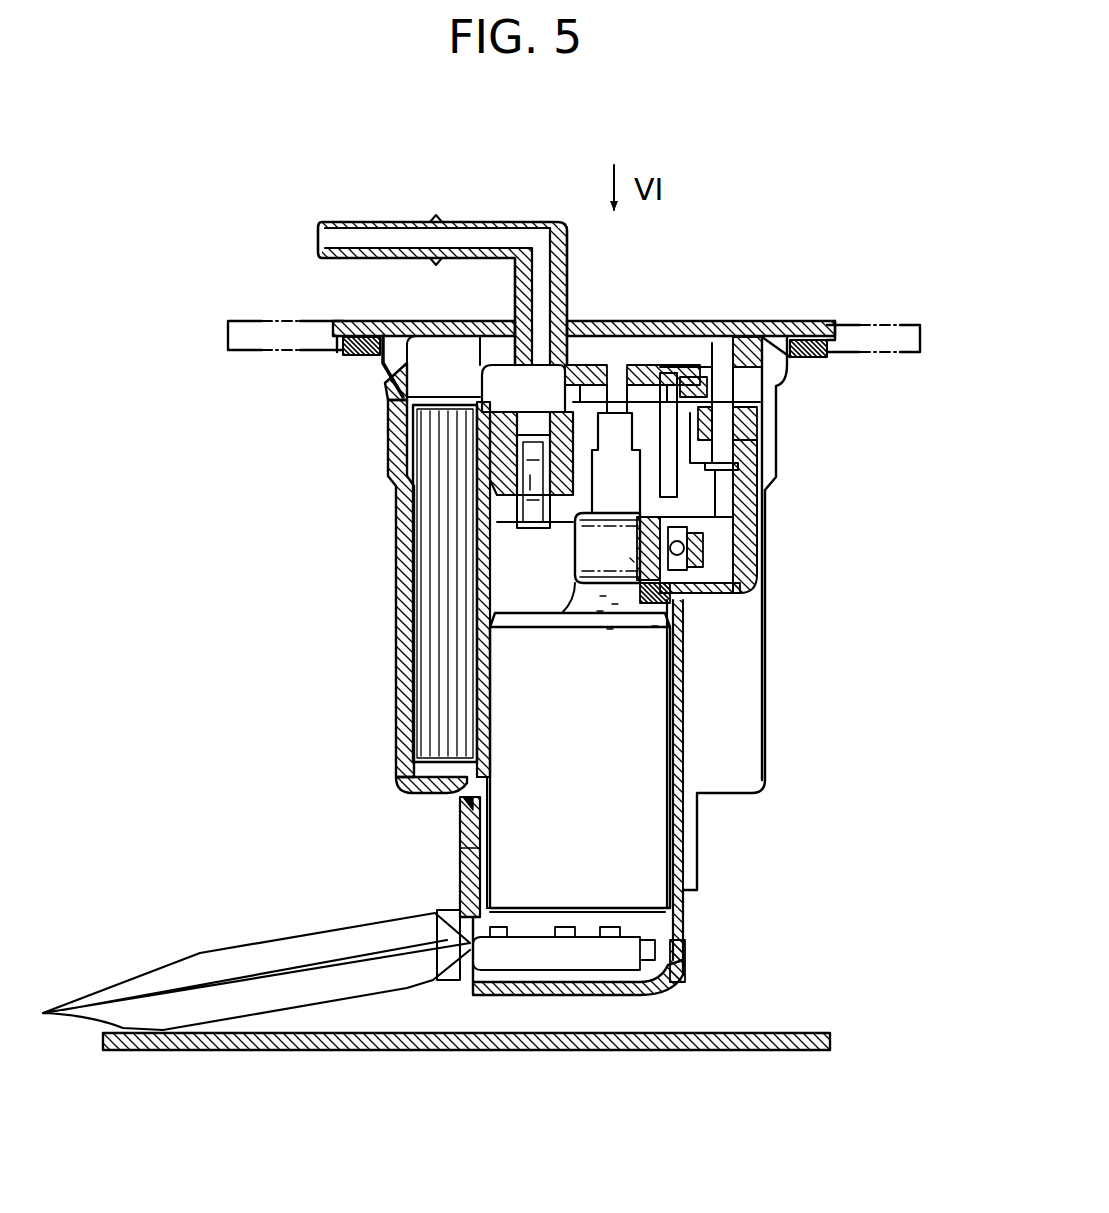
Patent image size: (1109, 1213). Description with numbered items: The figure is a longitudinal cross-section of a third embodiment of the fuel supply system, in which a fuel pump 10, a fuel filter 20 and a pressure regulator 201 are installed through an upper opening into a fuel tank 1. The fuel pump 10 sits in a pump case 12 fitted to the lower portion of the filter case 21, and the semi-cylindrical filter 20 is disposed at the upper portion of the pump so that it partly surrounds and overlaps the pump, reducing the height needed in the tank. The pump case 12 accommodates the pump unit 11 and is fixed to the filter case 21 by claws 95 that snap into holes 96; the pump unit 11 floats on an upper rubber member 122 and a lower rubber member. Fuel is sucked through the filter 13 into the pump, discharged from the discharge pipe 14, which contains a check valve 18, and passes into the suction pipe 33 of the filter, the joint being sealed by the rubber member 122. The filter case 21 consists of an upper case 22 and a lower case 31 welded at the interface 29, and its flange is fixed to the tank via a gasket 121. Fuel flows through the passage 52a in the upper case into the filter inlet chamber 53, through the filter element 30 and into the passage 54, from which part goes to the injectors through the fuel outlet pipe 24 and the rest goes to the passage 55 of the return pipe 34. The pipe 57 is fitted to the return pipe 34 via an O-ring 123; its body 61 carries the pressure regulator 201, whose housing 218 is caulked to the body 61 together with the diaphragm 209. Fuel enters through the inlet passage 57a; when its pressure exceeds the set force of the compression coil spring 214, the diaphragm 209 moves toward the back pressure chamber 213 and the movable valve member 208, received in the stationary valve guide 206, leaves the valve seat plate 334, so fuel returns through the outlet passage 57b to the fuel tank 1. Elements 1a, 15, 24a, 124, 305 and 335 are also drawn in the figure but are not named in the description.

The fuel tank 1 is at (866, 325).
The gasket / seal 1a is at (823, 338).
The fuel pump 10 is at (640, 750).
The pump unit 11 is at (655, 848).
The pump case 12 is at (683, 903).
The filter 13 is at (224, 963).
The discharge pipe 14 is at (483, 600).
The valve 15 is at (630, 425).
The check valve 18 is at (477, 640).
The fuel filter 20 is at (511, 613).
The filter case 21 is at (324, 570).
The upper case 22 is at (385, 382).
The fuel outlet pipe 24 is at (412, 221).
The pipe bore 24a is at (330, 238).
The interface 29 is at (727, 420).
The filter element 30 is at (425, 697).
The lower case 31 is at (393, 425).
The suction pipe 33 is at (497, 478).
The return pipe 34 is at (747, 462).
The passage 52a is at (497, 380).
The filter inlet chamber 53 is at (425, 765).
The passage 54 is at (423, 352).
The passage 55 is at (775, 415).
The pipe 57 is at (725, 571).
The inlet passage 57a is at (700, 525).
The outlet passage 57b is at (610, 630).
The body 61 is at (640, 430).
The claws 95 is at (460, 840).
The holes 96 is at (463, 817).
The gasket 121 is at (785, 345).
The upper rubber member 122 is at (519, 462).
The O-ring 123 is at (760, 447).
The bottom wall 124 is at (683, 947).
The pressure regulator 201 is at (600, 612).
The stationary valve guide 206 is at (700, 507).
The movable valve member 208 is at (603, 597).
The diaphragm 209 is at (655, 628).
The back pressure chamber 213 is at (582, 548).
The compression coil spring 214 is at (615, 605).
The housing 218 is at (630, 560).
The ball 305 is at (690, 548).
The valve seat plate 334 is at (735, 572).
The valve housing 335 is at (700, 588).